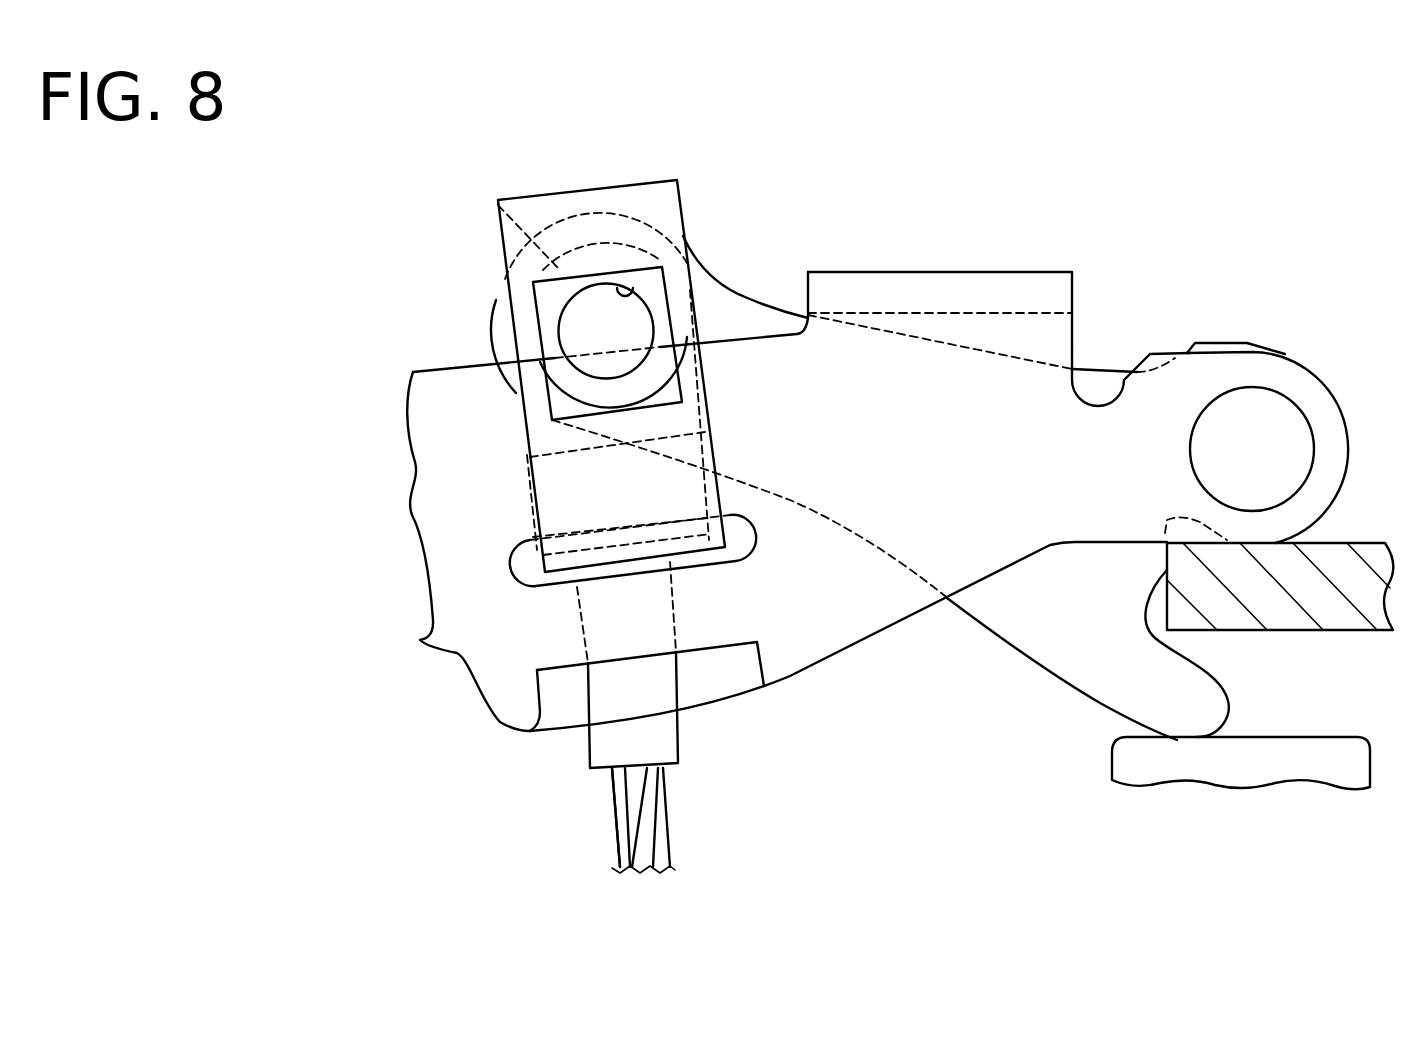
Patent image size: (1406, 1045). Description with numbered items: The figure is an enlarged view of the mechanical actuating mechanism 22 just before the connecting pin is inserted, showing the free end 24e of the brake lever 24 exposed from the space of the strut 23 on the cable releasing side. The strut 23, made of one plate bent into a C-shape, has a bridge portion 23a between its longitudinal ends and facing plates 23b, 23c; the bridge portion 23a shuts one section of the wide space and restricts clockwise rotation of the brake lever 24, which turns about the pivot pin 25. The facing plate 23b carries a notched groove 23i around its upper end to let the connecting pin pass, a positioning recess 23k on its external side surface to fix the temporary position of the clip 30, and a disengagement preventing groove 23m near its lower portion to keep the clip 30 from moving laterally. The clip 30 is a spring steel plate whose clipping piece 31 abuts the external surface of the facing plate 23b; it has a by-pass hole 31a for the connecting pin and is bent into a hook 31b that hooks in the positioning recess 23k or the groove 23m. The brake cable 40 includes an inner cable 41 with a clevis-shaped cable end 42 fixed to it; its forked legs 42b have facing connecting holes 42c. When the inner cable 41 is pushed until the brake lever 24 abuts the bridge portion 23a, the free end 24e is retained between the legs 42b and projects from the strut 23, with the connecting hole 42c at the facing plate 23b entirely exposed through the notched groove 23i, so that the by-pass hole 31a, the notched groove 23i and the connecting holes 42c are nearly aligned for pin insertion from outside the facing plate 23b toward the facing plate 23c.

The mechanical actuating mechanism 22 is at (684, 145).
The clip 30 is at (488, 231).
The clipping piece 31 is at (527, 509).
The by-pass hole 31a is at (536, 307).
The hook 31b is at (618, 527).
The cable end 42 is at (590, 241).
The forked legs 42b is at (495, 203).
The connecting holes 42c is at (618, 287).
The brake lever 24 is at (774, 290).
The free end 24e is at (512, 290).
The strut 23 is at (744, 327).
The bridge portion 23a is at (950, 271).
The facing plate 23b is at (472, 653).
The facing plate 23c is at (557, 733).
The notched groove 23i is at (567, 363).
The positioning recess 23k is at (745, 562).
The disengagement preventing groove 23m is at (718, 650).
The pivot pin 25 is at (1310, 425).
The brake cable 40 is at (676, 834).
The inner cable 41 is at (613, 813).